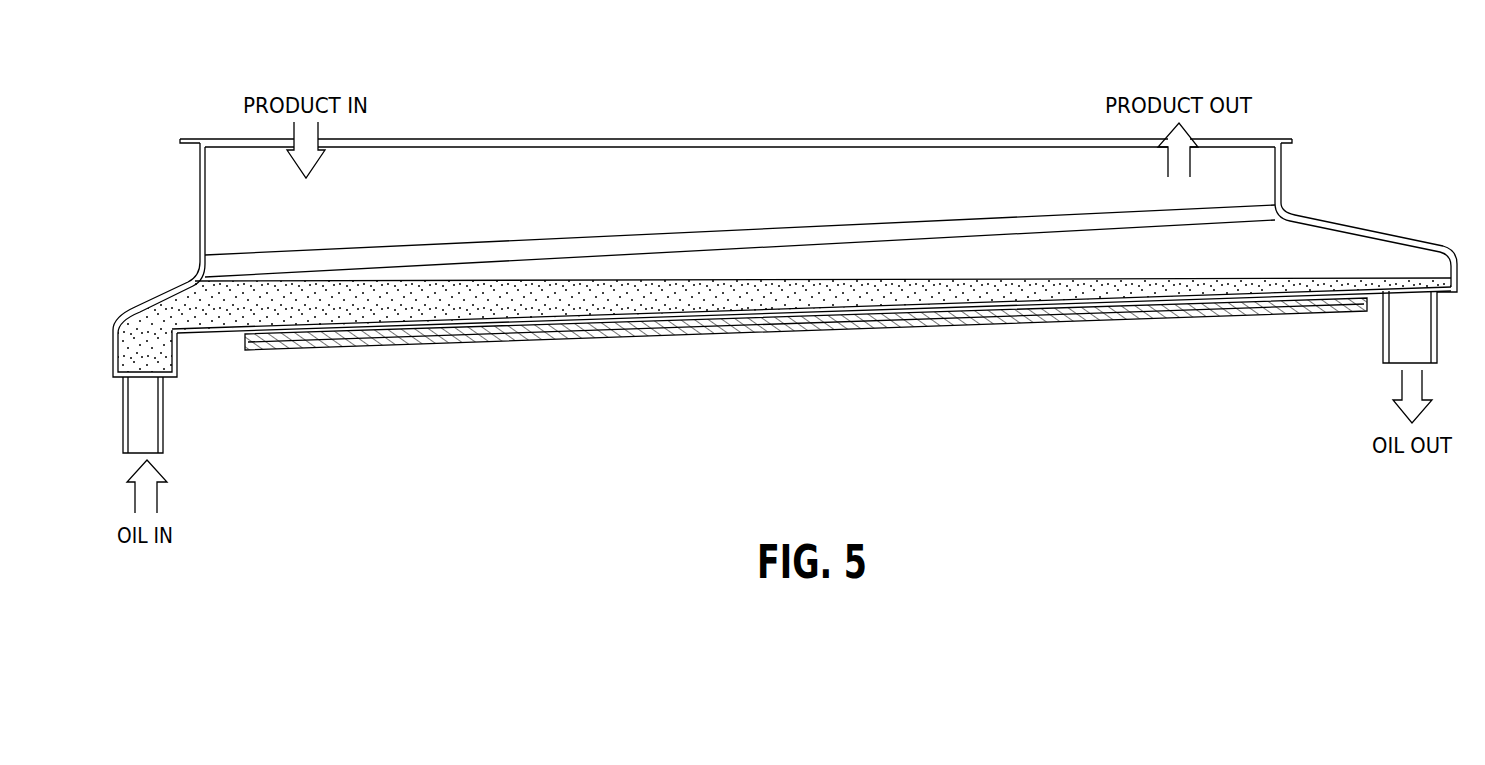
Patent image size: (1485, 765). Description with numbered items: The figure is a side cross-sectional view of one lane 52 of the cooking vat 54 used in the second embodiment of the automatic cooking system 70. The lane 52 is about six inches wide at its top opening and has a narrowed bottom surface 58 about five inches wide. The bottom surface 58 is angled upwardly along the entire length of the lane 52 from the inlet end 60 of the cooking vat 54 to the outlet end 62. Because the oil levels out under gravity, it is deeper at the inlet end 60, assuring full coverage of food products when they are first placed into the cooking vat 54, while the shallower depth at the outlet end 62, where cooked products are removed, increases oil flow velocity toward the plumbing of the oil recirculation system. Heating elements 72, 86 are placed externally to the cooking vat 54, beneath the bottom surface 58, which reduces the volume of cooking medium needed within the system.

The lane 52 is at (689, 187).
The cooking vat 54 is at (962, 139).
The bottom surface 58 is at (222, 335).
The inlet end 60 is at (200, 210).
The outlet end 62 is at (1360, 228).
The automatic cooking system 70 is at (1287, 97).
The heating element 72 is at (753, 322).
The heating element 86 is at (806, 349).